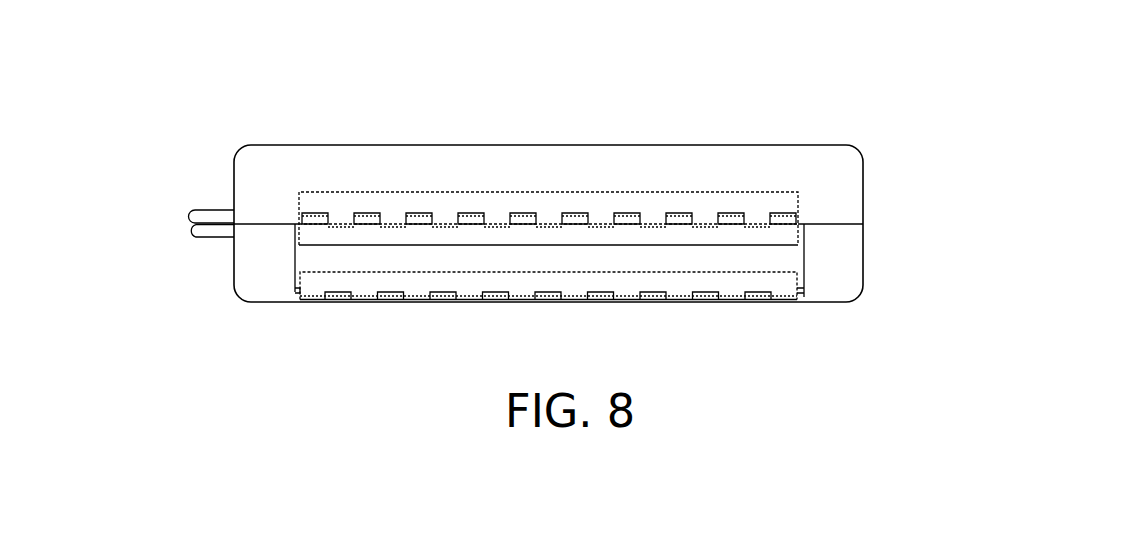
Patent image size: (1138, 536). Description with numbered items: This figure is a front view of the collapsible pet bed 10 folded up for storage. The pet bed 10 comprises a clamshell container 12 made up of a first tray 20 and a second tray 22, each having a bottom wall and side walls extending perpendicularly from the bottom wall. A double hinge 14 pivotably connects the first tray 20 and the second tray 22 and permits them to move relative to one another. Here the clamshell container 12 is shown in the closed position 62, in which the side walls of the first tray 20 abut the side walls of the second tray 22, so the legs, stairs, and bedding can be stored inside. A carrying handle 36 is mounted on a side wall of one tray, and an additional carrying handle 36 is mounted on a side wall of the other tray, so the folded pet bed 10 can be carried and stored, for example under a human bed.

The collapsible pet bed 10 is at (597, 90).
The clamshell container 12 is at (396, 165).
The double hinge 14 is at (727, 275).
The first tray 20 is at (838, 256).
The second tray 22 is at (838, 193).
The carrying handle 36 is at (197, 215).
The closed position 62 is at (1000, 233).